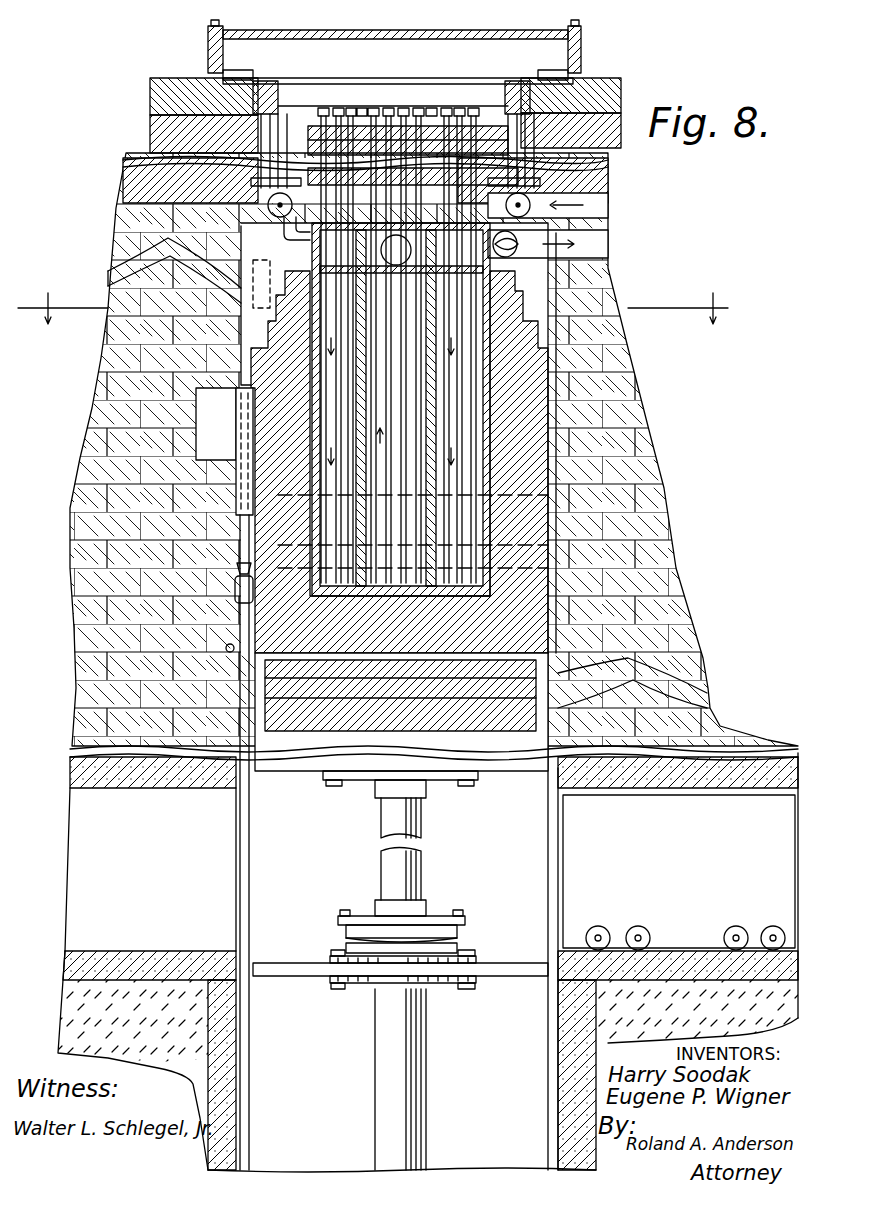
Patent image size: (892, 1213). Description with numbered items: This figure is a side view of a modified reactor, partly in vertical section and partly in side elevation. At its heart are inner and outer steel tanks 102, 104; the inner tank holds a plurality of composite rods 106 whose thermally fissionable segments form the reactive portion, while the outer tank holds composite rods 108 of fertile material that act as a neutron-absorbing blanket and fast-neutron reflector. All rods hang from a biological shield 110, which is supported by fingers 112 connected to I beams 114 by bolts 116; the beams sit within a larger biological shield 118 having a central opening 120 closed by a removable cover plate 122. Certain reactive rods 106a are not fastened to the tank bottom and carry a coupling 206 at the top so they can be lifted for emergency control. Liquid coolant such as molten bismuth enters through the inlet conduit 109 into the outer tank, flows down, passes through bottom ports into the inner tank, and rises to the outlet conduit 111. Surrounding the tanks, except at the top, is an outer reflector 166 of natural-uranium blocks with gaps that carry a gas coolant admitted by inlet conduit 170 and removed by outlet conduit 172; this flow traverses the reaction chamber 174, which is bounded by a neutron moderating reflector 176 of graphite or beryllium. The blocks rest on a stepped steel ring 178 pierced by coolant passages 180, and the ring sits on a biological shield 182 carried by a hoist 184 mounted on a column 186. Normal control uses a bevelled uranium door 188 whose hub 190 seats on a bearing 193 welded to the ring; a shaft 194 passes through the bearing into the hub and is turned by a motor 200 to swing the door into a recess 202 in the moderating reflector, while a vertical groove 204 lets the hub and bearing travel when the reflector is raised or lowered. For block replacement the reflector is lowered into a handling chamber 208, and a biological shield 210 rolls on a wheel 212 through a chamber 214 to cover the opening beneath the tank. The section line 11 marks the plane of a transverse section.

The inner steel tank 102 is at (300, 285).
The outer steel tank 104 is at (500, 400).
The composite rods 106 is at (490, 283).
The reactive rods 106a is at (405, 90).
The composite rods 108 is at (650, 463).
The inlet conduit 109 is at (585, 199).
The biological shield 110 is at (482, 120).
The outlet conduit 111 is at (583, 233).
The fingers 112 is at (399, 216).
The I beams 114 is at (205, 75).
The bolts 116 is at (118, 118).
The biological shield 118 is at (130, 108).
The central opening 120 is at (267, 95).
The cover plate 122 is at (447, 55).
The outer reflector 166 is at (95, 350).
The inlet conduit 170 is at (100, 270).
The outlet conduit 172 is at (702, 685).
The reaction chamber 174 is at (535, 325).
The neutron moderating reflector 176 is at (78, 525).
The steel ring 178 is at (600, 555).
The coolant passages 180 is at (228, 606).
The biological shield 182 is at (510, 720).
The hoist 184 is at (349, 896).
The column 186 is at (418, 1052).
The door 188 is at (236, 395).
The hub 190 is at (227, 425).
The bearing 193 is at (235, 470).
The shaft 194 is at (235, 540).
The motor 200 is at (228, 580).
The recess 202 is at (200, 412).
The vertical groove 204 is at (218, 640).
The coupling 206 is at (410, 72).
The handling chamber 208 is at (492, 1096).
The biological shield 210 is at (670, 858).
The wheel 212 is at (602, 915).
The chamber 214 is at (152, 782).
The section line 11 is at (389, 307).